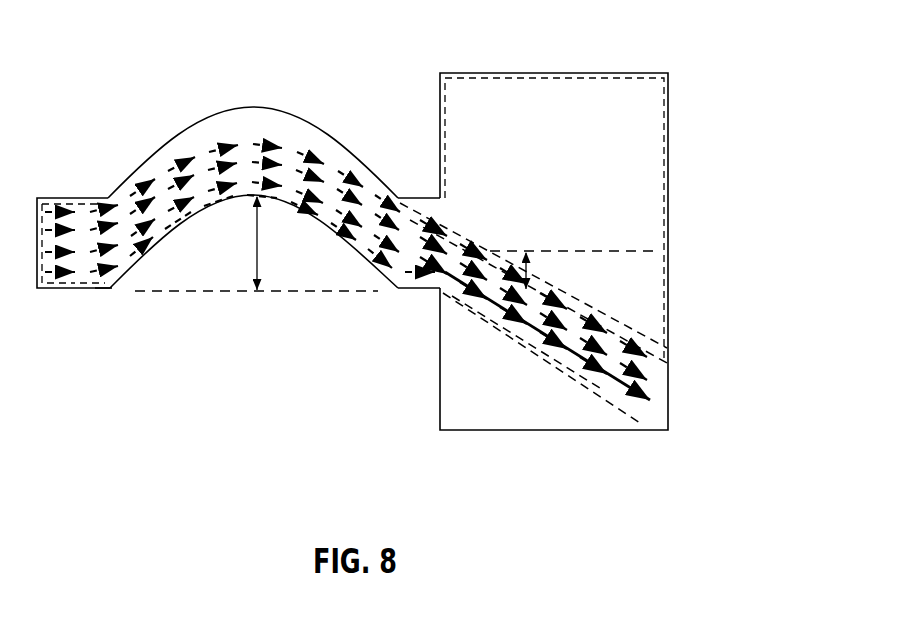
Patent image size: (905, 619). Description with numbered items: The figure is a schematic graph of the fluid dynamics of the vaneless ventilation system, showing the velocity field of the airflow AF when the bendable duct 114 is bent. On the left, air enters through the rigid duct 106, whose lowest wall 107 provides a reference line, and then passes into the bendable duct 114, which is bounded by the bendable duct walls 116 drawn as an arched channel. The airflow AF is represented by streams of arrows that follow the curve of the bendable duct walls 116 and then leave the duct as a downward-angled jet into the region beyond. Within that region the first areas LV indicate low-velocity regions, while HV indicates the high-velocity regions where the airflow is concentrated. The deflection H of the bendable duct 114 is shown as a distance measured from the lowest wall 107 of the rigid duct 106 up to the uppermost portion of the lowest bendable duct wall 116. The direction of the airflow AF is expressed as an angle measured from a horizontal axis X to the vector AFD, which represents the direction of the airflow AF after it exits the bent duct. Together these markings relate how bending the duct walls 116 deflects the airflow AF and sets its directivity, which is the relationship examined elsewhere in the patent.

The rigid duct 106 is at (53, 289).
The lowest wall 107 is at (104, 289).
The bendable duct 114 is at (274, 166).
The bendable duct walls 116 is at (272, 107).
The first areas LV is at (620, 73).
The horizontal axis X is at (643, 250).
The deflection H is at (276, 243).
The airflow AF is at (310, 150).
The vector representation of the direction of the airflow AFD is at (583, 363).
The high-velocity regions HV is at (602, 388).